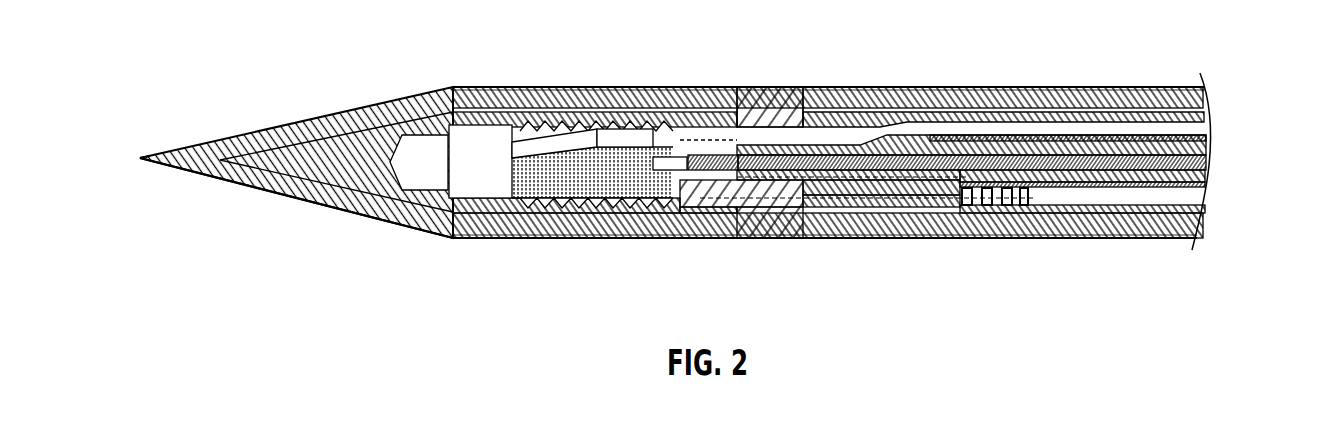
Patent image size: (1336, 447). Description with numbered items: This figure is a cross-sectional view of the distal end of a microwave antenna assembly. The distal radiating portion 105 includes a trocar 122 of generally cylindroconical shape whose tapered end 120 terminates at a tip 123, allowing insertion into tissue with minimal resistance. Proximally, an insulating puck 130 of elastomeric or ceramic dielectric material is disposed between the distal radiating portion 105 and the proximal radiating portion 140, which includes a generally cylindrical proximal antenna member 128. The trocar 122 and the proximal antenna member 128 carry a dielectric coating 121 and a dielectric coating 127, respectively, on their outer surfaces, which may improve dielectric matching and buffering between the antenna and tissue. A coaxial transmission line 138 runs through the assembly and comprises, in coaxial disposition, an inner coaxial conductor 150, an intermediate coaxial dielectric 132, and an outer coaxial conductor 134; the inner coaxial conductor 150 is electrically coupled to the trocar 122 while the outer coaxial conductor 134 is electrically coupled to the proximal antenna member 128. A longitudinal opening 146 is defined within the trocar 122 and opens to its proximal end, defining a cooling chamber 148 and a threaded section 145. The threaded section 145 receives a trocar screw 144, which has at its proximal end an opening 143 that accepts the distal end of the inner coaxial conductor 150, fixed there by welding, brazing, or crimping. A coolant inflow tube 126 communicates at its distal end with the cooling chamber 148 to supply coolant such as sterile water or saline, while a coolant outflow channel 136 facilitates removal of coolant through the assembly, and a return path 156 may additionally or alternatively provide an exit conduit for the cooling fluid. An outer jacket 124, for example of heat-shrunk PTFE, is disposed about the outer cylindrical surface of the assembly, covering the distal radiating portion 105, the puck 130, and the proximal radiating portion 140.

The distal radiating portion 105 is at (520, 265).
The tapered end 120 is at (281, 205).
The dielectric coating 121 is at (195, 163).
The trocar 122 is at (320, 124).
The tip 123 is at (140, 158).
The outer jacket 124 is at (748, 88).
The coolant inflow tube 126 is at (690, 135).
The dielectric coating 127 is at (1152, 100).
The proximal antenna member 128 is at (837, 112).
The insulating puck 130 is at (768, 215).
The intermediate coaxial dielectric 132 is at (1030, 140).
The outer coaxial conductor 134 is at (1083, 190).
The coolant outflow channel 136 is at (835, 187).
The coaxial transmission line 138 is at (1219, 141).
The proximal radiating portion 140 is at (975, 283).
The opening 143 is at (660, 160).
The trocar screw 144 is at (585, 190).
The threaded section 145 is at (513, 200).
The longitudinal opening 146 is at (490, 152).
The cooling chamber 148 is at (432, 162).
The inner coaxial conductor 150 is at (918, 155).
The return path 156 is at (1177, 195).